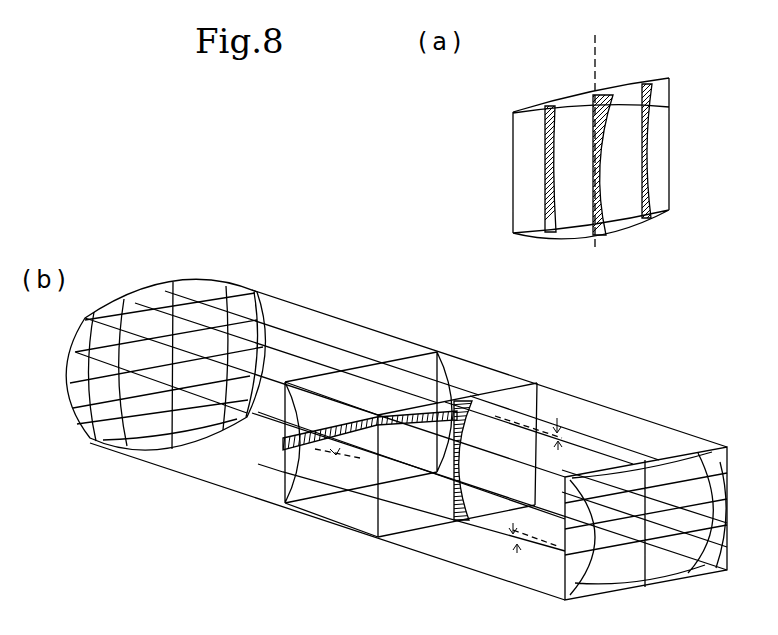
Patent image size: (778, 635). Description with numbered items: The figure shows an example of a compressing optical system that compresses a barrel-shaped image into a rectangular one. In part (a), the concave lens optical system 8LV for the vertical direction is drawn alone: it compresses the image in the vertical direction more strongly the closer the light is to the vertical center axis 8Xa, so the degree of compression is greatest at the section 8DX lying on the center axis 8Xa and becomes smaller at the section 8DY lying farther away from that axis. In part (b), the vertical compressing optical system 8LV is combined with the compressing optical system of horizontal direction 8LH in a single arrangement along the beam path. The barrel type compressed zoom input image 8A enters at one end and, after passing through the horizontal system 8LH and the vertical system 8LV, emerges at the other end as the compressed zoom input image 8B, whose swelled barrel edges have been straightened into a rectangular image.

The center axis 8Xa is at (585, 77).
The section 8DX is at (627, 130).
The section 8DY is at (660, 173).
The concave lens optical system of vertical direction 8LV is at (507, 379).
The compressing optical system of horizontal direction 8LH is at (409, 345).
The barrel type compressed zoom input image 8A is at (76, 432).
The compressed zoom input image 8B is at (663, 446).